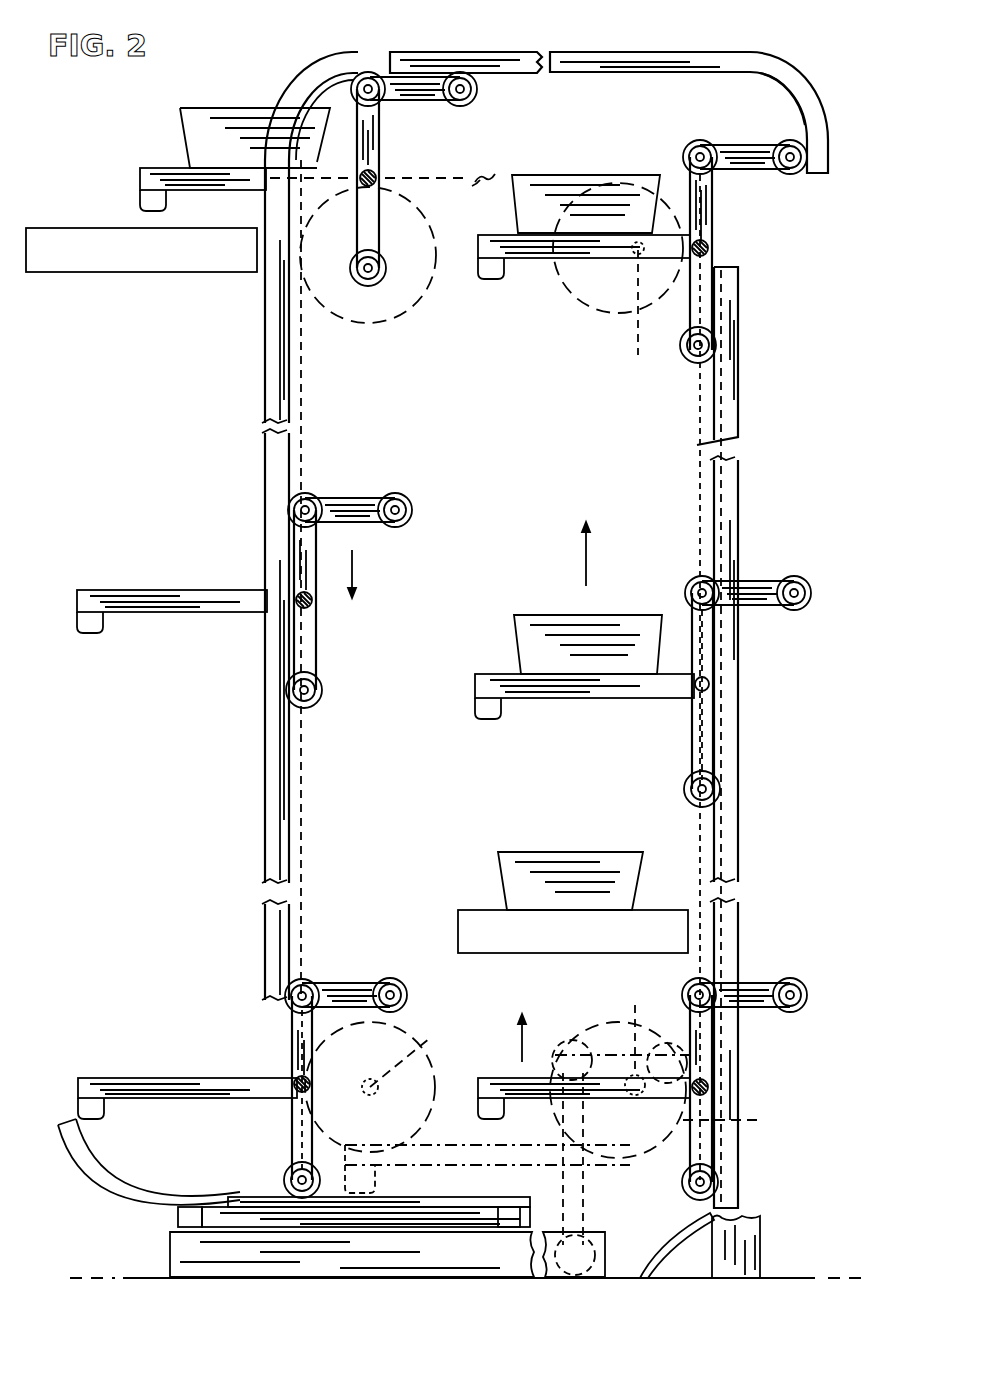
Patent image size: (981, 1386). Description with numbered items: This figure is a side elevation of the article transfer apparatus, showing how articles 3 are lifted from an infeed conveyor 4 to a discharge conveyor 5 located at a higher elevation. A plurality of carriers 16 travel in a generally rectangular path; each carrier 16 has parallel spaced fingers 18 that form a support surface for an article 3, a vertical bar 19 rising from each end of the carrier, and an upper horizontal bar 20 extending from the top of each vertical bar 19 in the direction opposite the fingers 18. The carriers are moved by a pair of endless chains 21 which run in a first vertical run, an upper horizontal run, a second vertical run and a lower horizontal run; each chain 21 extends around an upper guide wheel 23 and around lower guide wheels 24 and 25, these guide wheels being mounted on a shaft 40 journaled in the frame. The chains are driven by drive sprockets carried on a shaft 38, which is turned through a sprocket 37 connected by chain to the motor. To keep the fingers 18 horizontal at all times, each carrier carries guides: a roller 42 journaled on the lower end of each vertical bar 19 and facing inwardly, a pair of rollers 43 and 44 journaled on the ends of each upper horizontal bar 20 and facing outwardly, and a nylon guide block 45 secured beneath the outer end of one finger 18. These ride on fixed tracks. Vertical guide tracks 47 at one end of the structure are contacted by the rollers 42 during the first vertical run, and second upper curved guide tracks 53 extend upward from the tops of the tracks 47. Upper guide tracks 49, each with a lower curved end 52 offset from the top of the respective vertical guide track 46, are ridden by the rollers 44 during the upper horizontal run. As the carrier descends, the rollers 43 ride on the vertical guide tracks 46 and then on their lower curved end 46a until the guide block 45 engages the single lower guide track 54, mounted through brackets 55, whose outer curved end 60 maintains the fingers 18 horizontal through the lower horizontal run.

The article 3 is at (196, 112).
The infeed conveyor 4 is at (462, 908).
The discharge conveyor 5 is at (42, 228).
The carrier 16 is at (380, 166).
The fingers 18 is at (160, 168).
The vertical bar 19 is at (378, 228).
The upper horizontal bar 20 is at (422, 80).
The chain 21 is at (305, 352).
The upper guide wheel 23 is at (418, 302).
The lower guide wheel 24 is at (428, 1118).
The lower guide wheel 25 is at (739, 1124).
The sprocket 37 is at (641, 357).
The shaft 38 is at (616, 300).
The shaft 40 is at (424, 1050).
The roller 42 is at (378, 287).
The roller 43 is at (365, 70).
The roller 44 is at (478, 92).
The guide block 45 is at (145, 200).
The vertical guide track 46 is at (740, 490).
The lower curved end 46a is at (700, 1268).
The vertical guide track 47 is at (265, 728).
The upper guide track 49 is at (678, 33).
The lower curved end 52 is at (800, 50).
The upper curved guide track 53 is at (302, 78).
The guide track 54 is at (334, 1210).
The bracket 55 is at (188, 1215).
The outer curved end 60 is at (82, 1170).